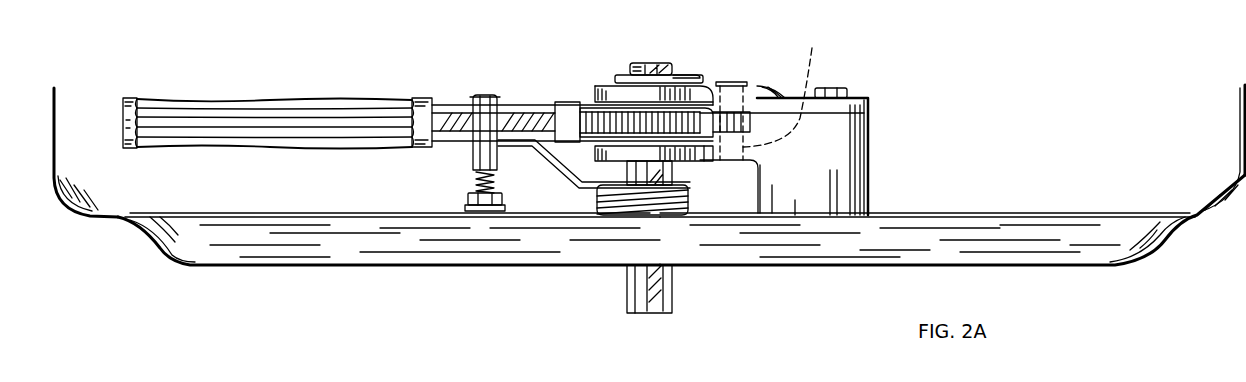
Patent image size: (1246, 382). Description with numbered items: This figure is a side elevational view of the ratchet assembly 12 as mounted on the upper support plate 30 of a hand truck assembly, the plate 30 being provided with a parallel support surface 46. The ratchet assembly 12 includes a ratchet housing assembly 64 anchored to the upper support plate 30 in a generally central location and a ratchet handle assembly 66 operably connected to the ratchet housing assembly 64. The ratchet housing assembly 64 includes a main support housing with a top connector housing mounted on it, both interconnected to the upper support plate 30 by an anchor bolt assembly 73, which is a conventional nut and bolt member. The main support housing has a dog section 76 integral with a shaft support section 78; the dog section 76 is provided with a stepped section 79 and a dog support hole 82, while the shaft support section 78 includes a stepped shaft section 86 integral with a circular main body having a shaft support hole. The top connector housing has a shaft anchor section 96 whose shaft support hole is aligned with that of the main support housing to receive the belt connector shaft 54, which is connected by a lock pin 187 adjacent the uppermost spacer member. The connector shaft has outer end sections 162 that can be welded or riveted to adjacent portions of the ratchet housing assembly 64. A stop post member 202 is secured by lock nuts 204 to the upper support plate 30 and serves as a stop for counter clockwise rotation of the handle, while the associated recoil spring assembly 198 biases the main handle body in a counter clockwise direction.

The ratchet assembly 12 is at (877, 117).
The upper support plate 30 is at (318, 250).
The parallel support surfaces 46 is at (1074, 214).
The belt connector shaft 54 is at (638, 287).
The ratchet housing assembly 64 is at (825, 160).
The ratchet handle assembly 66 is at (225, 118).
The anchor bolt assembly 73 is at (845, 87).
The dog section 76 is at (700, 157).
The shaft support section 78 is at (598, 153).
The stepped section 79 is at (752, 137).
The dog support hole 82 is at (812, 48).
The stepped shaft section 86 is at (717, 160).
The shaft anchor section 96 is at (480, 91).
The outer end sections 162 is at (735, 82).
The lock pin 187 is at (618, 76).
The recoil spring assembly 198 is at (627, 200).
The stop post member 202 is at (487, 100).
The lock nuts 204 is at (466, 203).